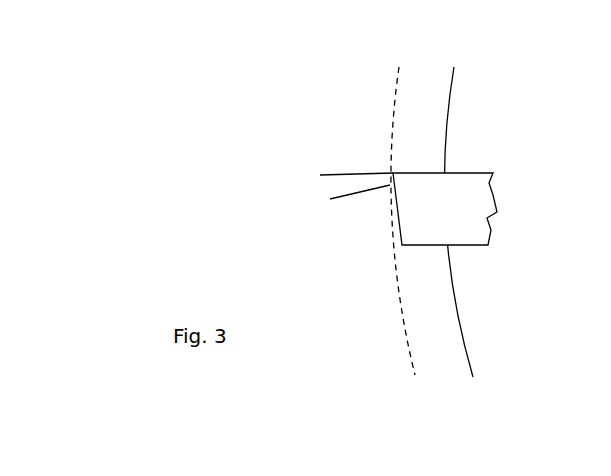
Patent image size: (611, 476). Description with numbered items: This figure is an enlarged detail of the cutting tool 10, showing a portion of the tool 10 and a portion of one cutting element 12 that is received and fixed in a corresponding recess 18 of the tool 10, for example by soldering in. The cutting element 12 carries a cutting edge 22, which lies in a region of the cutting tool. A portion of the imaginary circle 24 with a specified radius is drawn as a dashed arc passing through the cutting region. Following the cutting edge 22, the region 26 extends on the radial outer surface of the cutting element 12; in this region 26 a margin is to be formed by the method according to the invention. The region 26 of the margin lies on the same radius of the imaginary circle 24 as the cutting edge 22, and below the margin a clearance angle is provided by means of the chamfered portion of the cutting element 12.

The cutting tool 10 is at (447, 118).
The cutting element 12 is at (478, 217).
The recess 18 is at (550, 21).
The cutting edge 22 is at (320, 175).
The imaginary circle 24 is at (395, 102).
The region 26 is at (330, 199).